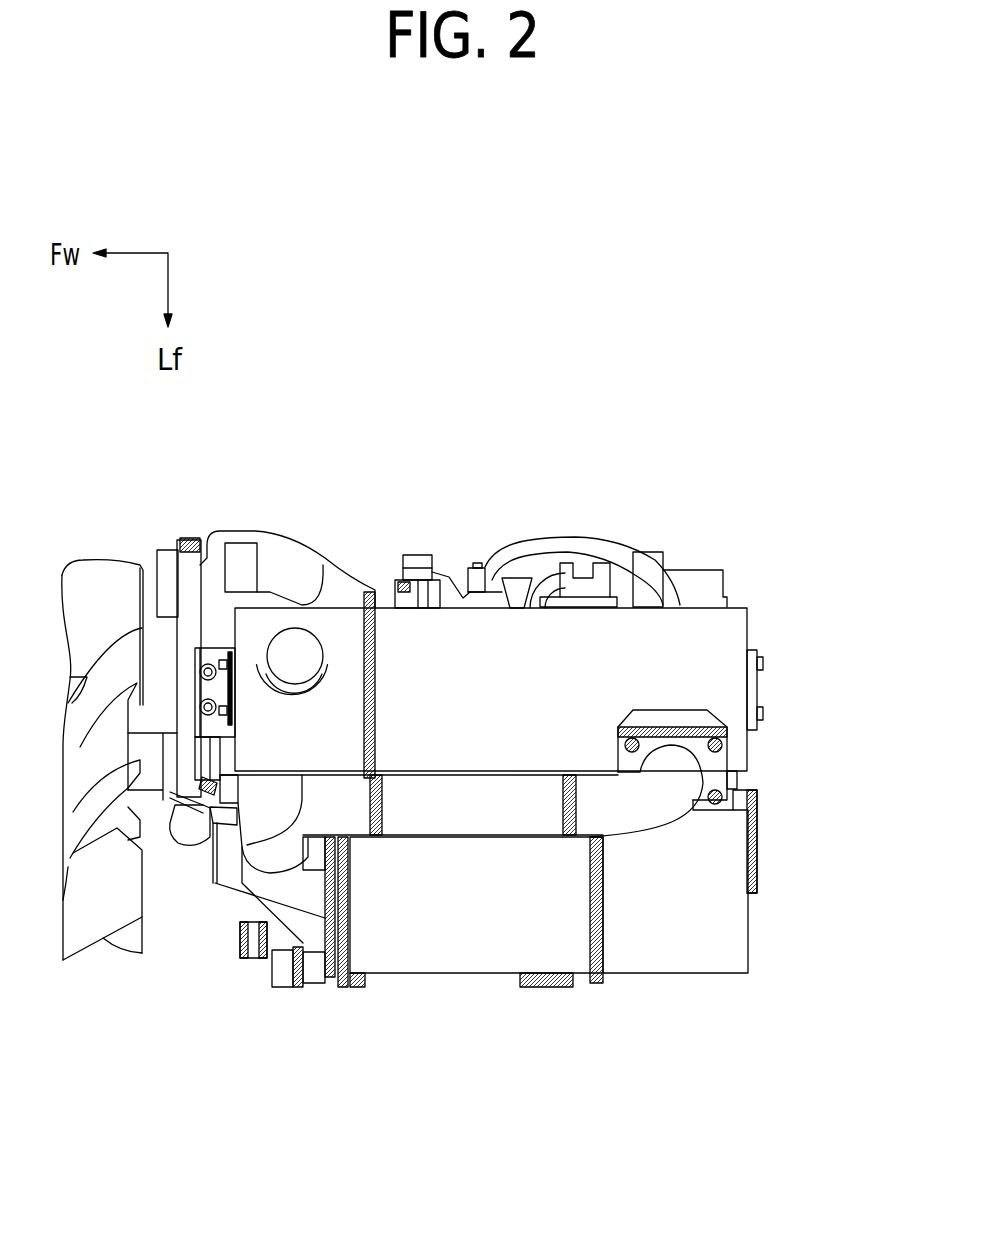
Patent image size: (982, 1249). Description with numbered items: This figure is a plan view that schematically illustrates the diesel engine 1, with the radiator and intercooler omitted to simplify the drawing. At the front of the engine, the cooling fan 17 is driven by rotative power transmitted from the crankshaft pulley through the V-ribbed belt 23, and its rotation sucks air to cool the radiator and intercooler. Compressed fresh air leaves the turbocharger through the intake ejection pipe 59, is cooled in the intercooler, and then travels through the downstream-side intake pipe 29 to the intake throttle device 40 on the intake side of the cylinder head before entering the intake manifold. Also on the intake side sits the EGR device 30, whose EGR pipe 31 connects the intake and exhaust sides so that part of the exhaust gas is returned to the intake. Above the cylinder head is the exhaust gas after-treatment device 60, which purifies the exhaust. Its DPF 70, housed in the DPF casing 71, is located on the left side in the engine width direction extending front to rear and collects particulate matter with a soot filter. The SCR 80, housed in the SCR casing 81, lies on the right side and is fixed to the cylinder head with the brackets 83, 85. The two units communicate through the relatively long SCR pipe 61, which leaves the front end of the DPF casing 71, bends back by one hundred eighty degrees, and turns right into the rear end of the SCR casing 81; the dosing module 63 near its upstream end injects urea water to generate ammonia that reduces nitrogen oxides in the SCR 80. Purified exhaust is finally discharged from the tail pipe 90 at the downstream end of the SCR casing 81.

The diesel engine 1 is at (510, 518).
The cooling fan 17 is at (95, 917).
The V-ribbed belt 23 is at (168, 538).
The downstream-side intake pipe 29 is at (280, 558).
The EGR device 30 is at (583, 548).
The EGR pipe 31 is at (657, 548).
The intake throttle device 40 is at (417, 562).
The intake ejection pipe 59 is at (277, 980).
The exhaust gas after-treatment device 60 is at (770, 780).
The SCR pipe 61 is at (637, 818).
The dosing module 63 is at (213, 867).
The DPF 70 is at (543, 950).
The DPF casing 71 is at (475, 954).
The SCR 80 is at (552, 670).
The SCR casing 81 is at (712, 637).
The bracket 83 is at (203, 687).
The bracket 85 is at (757, 683).
The tail pipe 90 is at (303, 645).